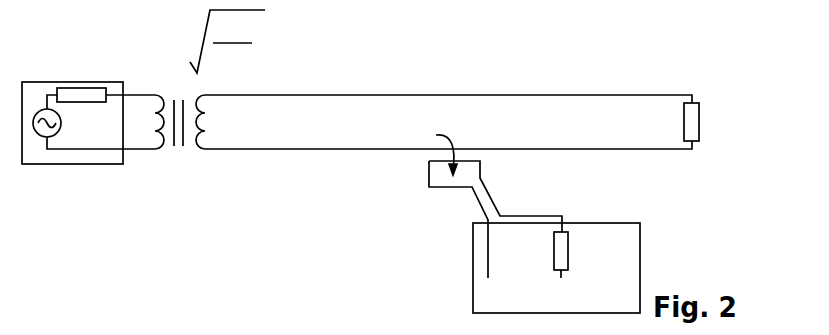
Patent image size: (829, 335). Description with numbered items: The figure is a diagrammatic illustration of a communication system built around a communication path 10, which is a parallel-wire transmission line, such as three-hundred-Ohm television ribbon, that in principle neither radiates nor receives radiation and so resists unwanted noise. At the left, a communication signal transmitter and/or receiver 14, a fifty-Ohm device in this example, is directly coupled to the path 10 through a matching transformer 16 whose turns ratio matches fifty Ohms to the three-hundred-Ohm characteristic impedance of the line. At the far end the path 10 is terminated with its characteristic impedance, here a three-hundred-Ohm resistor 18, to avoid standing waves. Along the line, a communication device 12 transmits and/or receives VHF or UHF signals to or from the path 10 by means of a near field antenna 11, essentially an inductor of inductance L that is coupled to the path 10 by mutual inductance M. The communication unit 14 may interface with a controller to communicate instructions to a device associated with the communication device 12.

The communication path 10 is at (430, 95).
The near field antenna 11 is at (450, 186).
The communication device 12 is at (640, 258).
The communication signal transmitter and/or receiver 14 is at (90, 164).
The matching transformer 16 is at (200, 150).
The 300-Ohm resistor 18 is at (699, 123).